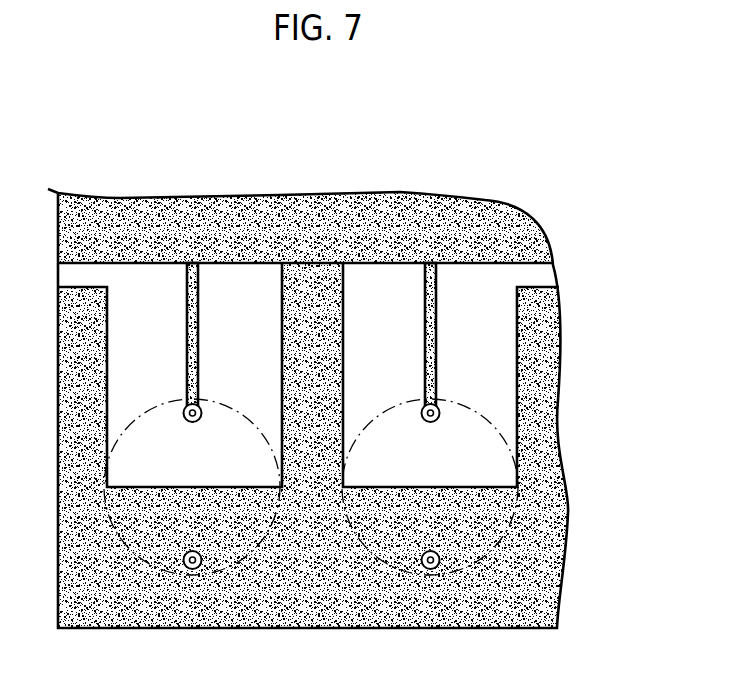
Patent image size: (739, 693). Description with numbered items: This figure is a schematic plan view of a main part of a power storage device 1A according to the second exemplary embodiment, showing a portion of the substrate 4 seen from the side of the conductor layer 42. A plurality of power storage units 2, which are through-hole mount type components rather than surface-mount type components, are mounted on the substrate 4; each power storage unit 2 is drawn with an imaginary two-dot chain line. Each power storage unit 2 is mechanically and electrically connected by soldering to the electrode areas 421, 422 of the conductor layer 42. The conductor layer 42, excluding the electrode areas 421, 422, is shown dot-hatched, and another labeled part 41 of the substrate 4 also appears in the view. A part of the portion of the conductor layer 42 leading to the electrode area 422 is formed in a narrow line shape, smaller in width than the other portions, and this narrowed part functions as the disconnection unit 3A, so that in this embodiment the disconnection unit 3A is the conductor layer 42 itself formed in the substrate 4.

The power storage device 1A is at (321, 168).
The substrate 4 is at (465, 199).
The first core portion 41 is at (542, 279).
The conductor layer 42 is at (392, 207).
The disconnection unit 3A is at (200, 310).
The power storage unit 2 is at (147, 404).
The electrode area 421 is at (199, 569).
The electrode area 422 is at (192, 423).